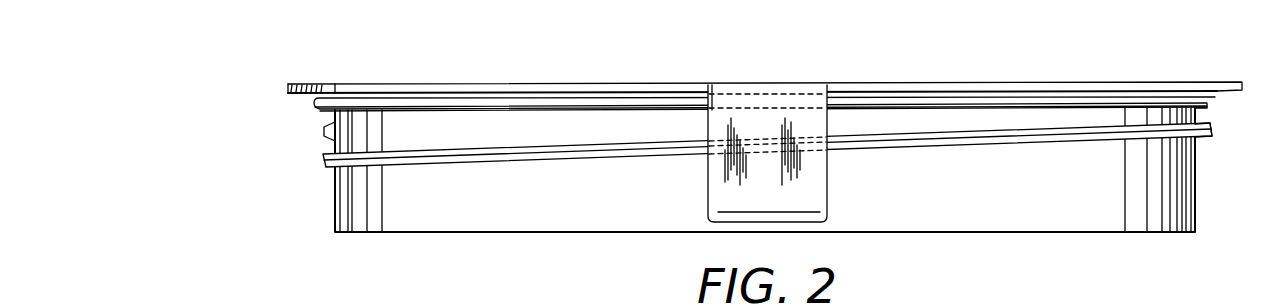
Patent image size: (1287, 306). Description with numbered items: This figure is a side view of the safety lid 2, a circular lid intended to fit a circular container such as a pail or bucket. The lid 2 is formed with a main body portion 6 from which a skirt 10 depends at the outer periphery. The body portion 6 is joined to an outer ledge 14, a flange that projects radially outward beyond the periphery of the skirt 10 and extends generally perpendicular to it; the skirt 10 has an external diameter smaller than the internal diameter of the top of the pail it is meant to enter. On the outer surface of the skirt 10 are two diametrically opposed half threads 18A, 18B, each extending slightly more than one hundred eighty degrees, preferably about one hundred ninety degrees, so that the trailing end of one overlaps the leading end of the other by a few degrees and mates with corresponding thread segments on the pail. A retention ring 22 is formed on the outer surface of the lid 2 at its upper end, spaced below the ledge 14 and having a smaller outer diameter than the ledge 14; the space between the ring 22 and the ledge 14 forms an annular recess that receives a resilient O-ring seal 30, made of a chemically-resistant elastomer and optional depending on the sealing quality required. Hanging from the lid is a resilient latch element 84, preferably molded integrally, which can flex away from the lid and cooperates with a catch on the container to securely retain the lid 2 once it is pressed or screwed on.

The lid 2 is at (568, 57).
The main body portion 6 is at (1203, 112).
The skirt 10 is at (338, 198).
The outer ledge 14 is at (302, 84).
The half thread 18A is at (957, 138).
The half thread 18B is at (1207, 162).
The retention ring 22 is at (328, 117).
The O-ring seal 30 is at (317, 100).
The latch element 84 is at (830, 193).